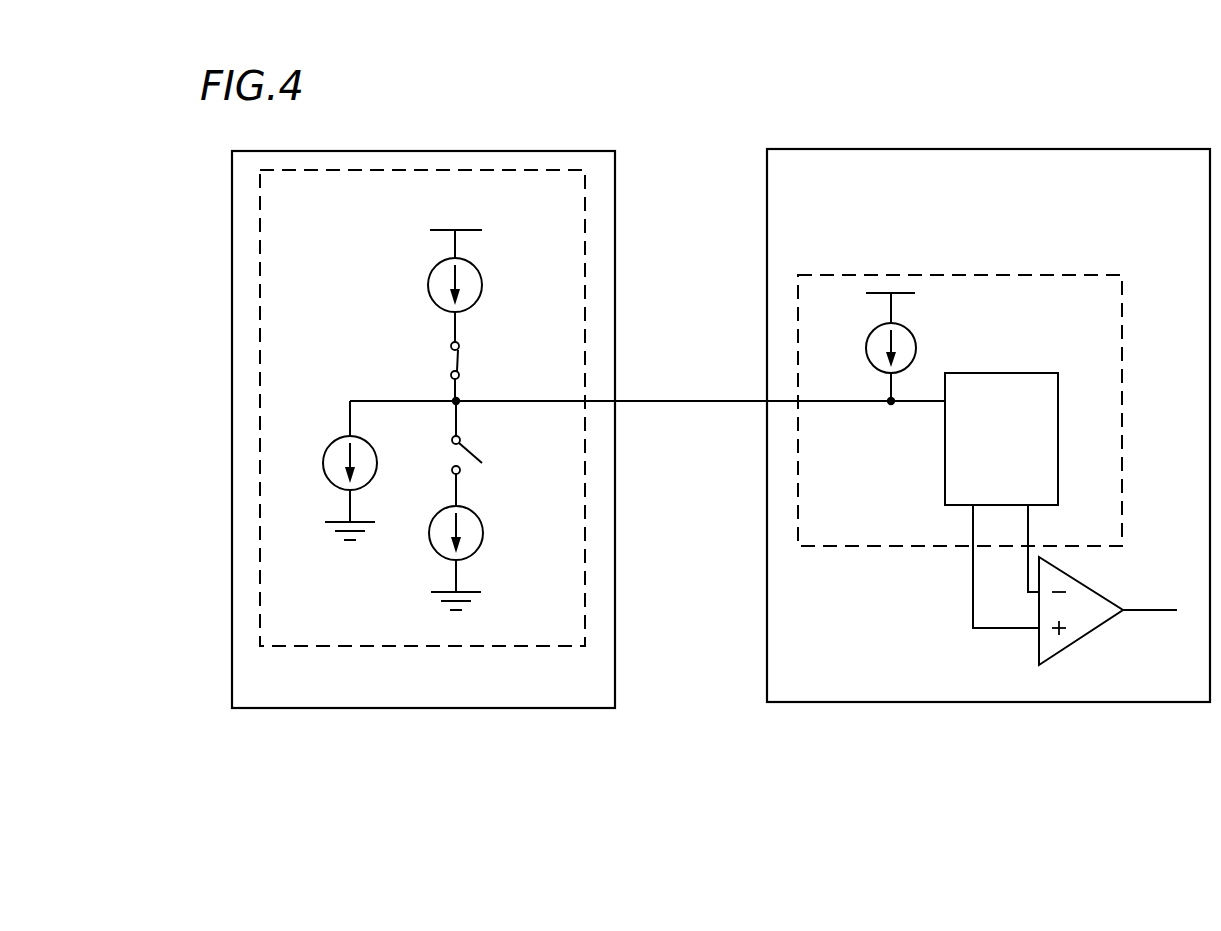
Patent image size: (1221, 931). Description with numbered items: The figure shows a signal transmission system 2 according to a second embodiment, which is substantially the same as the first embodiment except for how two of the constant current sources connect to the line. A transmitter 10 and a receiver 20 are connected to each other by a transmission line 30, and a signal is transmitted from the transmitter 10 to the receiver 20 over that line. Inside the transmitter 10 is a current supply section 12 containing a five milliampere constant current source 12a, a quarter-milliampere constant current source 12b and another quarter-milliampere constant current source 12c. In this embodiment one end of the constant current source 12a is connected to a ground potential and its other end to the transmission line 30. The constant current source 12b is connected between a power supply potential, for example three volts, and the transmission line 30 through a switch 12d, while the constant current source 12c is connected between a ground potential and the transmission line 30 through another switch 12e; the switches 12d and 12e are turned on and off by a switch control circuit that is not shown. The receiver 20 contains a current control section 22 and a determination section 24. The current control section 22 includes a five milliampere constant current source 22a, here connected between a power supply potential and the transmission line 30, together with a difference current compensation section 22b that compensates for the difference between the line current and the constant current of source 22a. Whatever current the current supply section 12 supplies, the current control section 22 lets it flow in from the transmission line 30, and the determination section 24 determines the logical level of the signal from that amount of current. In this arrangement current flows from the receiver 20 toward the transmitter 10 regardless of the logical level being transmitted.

The signal transmission system 2 is at (690, 774).
The transmitter 10 is at (458, 151).
The current supply section 12 is at (290, 648).
The constant current source 12a is at (324, 452).
The constant current source 12b is at (482, 272).
The constant current source 12c is at (483, 533).
The switch 12d is at (462, 366).
The switch 12e is at (470, 445).
The receiver 20 is at (1087, 149).
The current control section 22 is at (1085, 273).
The constant current source 22a is at (866, 352).
The difference current compensation section 22b is at (1000, 373).
The determination section 24 is at (1088, 633).
The transmission line 30 is at (686, 401).